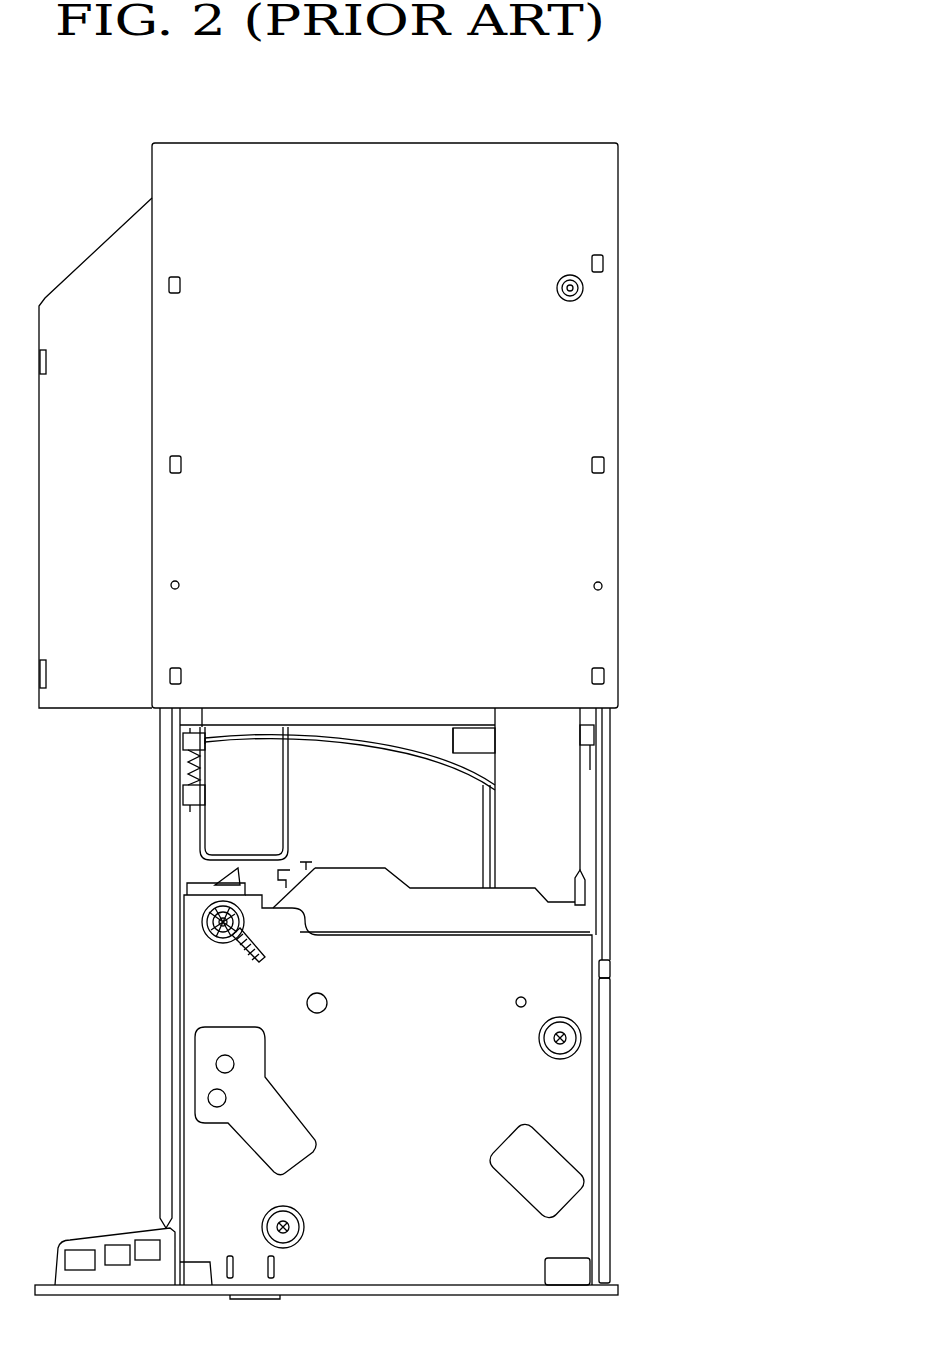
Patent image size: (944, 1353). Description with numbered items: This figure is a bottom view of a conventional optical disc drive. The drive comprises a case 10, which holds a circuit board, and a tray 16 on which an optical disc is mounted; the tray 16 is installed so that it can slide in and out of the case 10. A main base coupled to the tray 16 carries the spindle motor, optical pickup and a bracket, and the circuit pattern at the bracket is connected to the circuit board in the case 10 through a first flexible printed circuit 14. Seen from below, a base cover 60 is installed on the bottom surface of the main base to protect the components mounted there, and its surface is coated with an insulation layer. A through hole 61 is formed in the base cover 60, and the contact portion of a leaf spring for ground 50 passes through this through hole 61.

The case 10 is at (600, 503).
The first flexible printed circuit 14 is at (558, 826).
The tray 16 is at (322, 808).
The leaf spring for ground 50 is at (200, 934).
The base cover 60 is at (570, 1080).
The through hole 61 is at (262, 962).